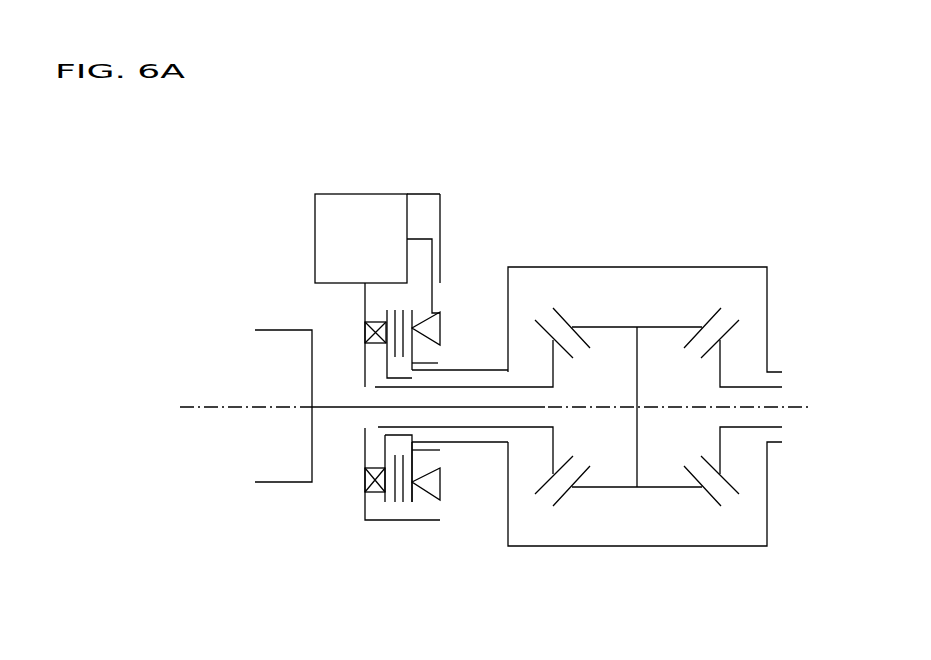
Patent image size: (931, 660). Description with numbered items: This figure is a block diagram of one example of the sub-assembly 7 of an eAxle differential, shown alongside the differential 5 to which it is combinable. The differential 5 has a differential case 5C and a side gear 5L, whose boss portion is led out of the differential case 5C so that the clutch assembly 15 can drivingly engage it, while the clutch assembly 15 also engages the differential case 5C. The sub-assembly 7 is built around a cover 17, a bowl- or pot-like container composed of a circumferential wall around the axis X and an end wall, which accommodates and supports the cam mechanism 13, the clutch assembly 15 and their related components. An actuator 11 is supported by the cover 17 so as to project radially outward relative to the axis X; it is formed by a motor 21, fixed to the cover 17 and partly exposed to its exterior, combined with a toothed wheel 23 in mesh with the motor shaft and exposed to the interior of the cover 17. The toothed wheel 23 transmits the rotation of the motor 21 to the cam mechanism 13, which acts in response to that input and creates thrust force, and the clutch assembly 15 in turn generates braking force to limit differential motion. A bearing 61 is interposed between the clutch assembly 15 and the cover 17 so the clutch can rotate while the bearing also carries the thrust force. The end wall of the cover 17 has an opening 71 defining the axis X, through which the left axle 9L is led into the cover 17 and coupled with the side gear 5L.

The sub-assembly 7 is at (358, 170).
The motor 21 is at (315, 238).
The cover 17 is at (425, 194).
The actuator 11 is at (447, 208).
The toothed wheel 23 is at (437, 287).
The cam mechanism 13 is at (442, 332).
The bearing 61 is at (366, 316).
The clutch assembly 15 is at (398, 512).
The left axle 9L is at (275, 483).
The opening 71 is at (357, 417).
The axis X is at (800, 405).
The differential 5 is at (667, 256).
The differential case 5C is at (573, 266).
The left side gear 5L is at (480, 427).